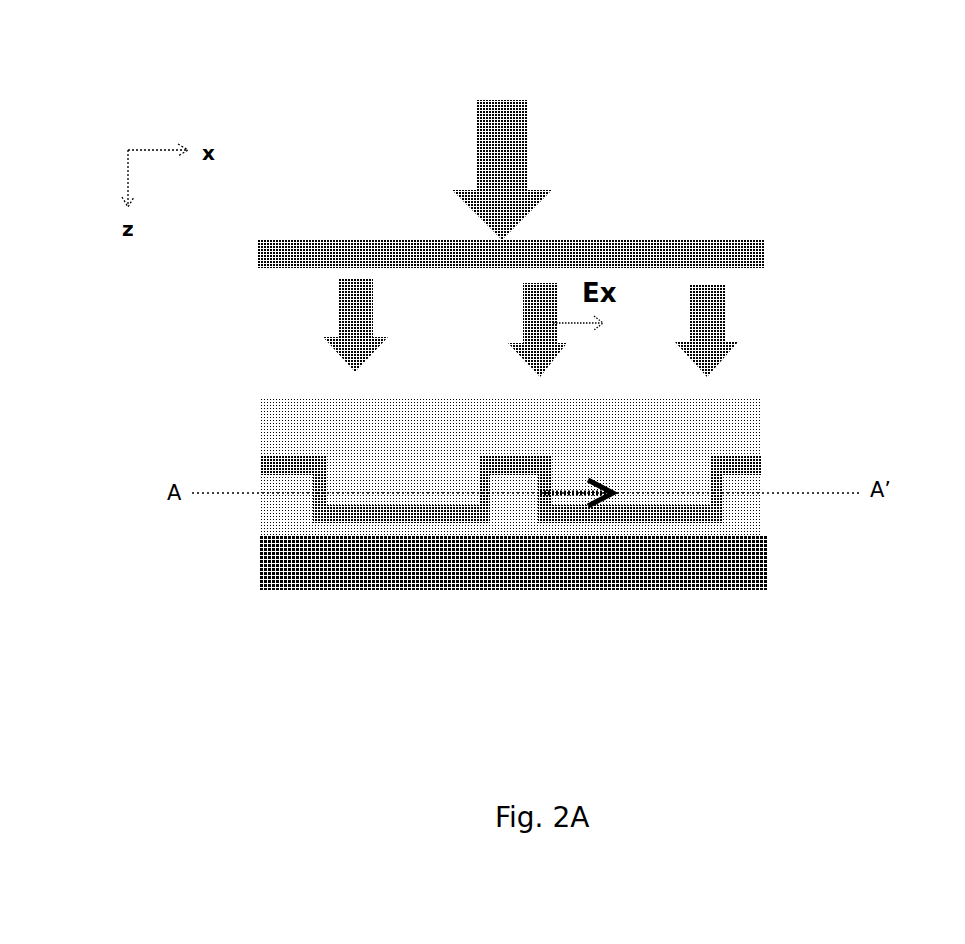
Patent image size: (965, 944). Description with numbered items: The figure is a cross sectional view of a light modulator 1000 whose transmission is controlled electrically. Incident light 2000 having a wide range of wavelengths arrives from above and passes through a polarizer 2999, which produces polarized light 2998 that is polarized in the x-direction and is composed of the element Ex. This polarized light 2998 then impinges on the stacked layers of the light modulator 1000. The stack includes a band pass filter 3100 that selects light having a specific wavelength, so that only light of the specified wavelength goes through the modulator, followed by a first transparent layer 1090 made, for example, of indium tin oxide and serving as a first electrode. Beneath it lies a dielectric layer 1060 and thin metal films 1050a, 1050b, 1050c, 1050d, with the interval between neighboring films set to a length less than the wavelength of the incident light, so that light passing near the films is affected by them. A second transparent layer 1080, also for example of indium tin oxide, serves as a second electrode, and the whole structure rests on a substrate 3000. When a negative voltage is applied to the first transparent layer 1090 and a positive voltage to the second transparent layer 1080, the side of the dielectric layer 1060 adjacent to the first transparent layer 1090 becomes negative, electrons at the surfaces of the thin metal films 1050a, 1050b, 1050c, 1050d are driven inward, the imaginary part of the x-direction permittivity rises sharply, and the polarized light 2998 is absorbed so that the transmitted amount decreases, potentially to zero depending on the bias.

The light modulator 1000 is at (107, 112).
The incident light 2000 is at (533, 170).
The polarizer 2999 is at (782, 262).
The polarized light 2998 is at (730, 317).
The band pass filter 3100 is at (510, 438).
The first transparent layer 1090 is at (757, 432).
The dielectric layer 1060 is at (259, 463).
The second transparent layer 1080 is at (260, 518).
The substrate 3000 is at (495, 628).
The thin metal film 1050a is at (320, 590).
The thin metal film 1050b is at (443, 590).
The thin metal film 1050c is at (588, 590).
The thin metal film 1050d is at (738, 590).